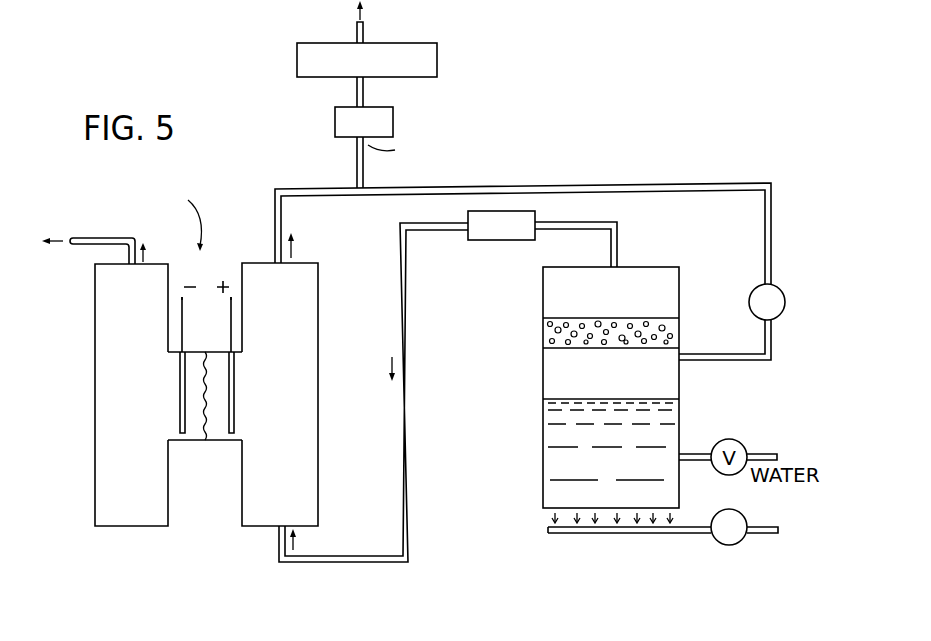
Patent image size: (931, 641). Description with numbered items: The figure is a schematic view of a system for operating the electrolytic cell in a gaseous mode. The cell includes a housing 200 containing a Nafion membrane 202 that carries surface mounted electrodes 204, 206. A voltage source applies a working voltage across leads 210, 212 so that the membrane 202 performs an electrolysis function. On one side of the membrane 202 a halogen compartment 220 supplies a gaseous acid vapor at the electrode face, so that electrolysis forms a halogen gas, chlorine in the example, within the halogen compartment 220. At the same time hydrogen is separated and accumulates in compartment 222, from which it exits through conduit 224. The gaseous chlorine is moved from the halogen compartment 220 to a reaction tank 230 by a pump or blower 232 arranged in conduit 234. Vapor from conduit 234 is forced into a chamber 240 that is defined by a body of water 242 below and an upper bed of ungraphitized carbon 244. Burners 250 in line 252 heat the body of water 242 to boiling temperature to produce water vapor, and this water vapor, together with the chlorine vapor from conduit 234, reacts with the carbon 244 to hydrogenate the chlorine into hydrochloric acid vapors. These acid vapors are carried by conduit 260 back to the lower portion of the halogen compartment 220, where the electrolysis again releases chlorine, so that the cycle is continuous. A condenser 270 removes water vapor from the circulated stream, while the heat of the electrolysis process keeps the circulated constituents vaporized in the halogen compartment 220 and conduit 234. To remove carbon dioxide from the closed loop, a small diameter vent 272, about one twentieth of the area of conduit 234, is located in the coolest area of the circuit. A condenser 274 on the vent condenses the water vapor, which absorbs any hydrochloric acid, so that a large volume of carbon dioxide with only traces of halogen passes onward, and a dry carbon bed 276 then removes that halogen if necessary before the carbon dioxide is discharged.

The housing 200 is at (92, 478).
The Nafion membrane 202 is at (205, 440).
The electrode 204 is at (180, 392).
The electrode 206 is at (234, 393).
The lead 210 is at (181, 297).
The lead 212 is at (231, 334).
The halogen compartment 220 is at (318, 318).
The hydrogen compartment 222 is at (94, 330).
The conduit 224 is at (98, 238).
The reaction tank 230 is at (662, 267).
The pump or blower 232 is at (783, 296).
The conduit 234 is at (690, 183).
The chamber 240 is at (547, 370).
The body of water 242 is at (553, 470).
The bed of ungraphitized carbon 244 is at (680, 334).
The burners 250 is at (620, 534).
The line 252 is at (760, 534).
The conduit 260 is at (375, 558).
The condenser 270 is at (487, 243).
The vent 272 is at (357, 165).
The condenser 274 is at (393, 118).
The dry carbon bed 276 is at (437, 50).